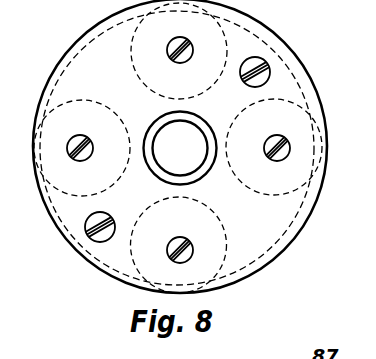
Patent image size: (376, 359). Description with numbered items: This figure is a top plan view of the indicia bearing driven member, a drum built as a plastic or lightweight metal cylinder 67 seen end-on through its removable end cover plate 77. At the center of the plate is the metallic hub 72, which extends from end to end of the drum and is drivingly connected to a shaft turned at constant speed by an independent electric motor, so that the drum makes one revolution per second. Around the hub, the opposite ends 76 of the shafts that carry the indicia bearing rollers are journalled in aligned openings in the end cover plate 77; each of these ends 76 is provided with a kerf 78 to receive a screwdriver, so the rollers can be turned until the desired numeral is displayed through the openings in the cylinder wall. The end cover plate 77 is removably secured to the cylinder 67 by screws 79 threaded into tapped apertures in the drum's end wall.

The cylinder 67 is at (304, 59).
The hub 72 is at (156, 121).
The opposite ends of the shafts 76 is at (181, 37).
The end cover plate 77 is at (257, 236).
The kerfs 78 is at (178, 63).
The screws 79 is at (261, 58).